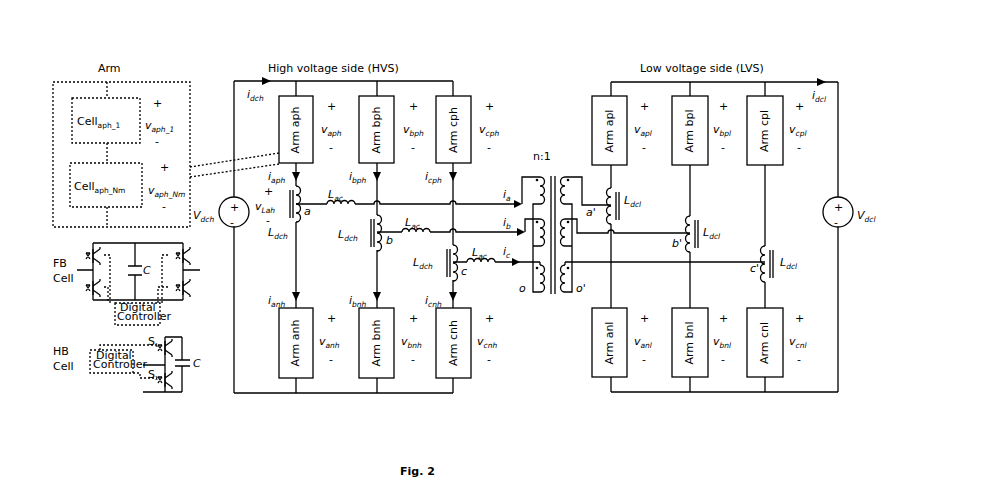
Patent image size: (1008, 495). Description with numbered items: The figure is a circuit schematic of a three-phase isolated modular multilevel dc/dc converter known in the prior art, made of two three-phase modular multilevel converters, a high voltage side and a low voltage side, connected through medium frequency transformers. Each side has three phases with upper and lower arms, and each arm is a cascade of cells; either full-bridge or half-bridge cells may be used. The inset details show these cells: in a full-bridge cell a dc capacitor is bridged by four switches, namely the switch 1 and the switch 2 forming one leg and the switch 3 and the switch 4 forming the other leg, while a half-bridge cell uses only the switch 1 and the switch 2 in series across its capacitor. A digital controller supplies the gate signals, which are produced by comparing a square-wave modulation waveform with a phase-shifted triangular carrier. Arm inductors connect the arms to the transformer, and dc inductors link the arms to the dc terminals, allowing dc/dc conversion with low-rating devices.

The switch S1 1 is at (100, 253).
The switch S2 2 is at (100, 285).
The switch S3 3 is at (172, 253).
The switch S4 4 is at (172, 285).